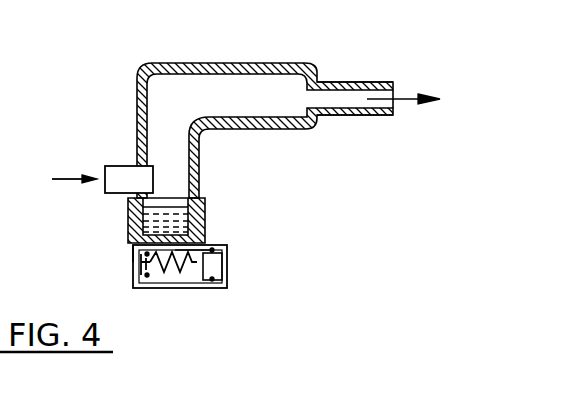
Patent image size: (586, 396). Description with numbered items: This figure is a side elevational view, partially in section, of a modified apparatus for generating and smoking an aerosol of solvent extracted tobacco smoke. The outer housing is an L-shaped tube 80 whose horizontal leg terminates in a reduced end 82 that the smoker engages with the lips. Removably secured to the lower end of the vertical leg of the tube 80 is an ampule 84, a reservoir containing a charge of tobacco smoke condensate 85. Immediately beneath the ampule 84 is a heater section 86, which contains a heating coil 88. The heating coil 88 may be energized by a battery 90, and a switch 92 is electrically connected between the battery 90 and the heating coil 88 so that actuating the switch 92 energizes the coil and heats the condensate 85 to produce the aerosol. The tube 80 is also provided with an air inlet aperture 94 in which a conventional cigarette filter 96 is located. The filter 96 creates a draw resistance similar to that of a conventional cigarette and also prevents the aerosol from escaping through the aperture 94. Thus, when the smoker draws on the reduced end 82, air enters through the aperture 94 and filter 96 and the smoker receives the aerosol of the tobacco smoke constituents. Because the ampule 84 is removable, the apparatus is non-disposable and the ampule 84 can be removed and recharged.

The L-shaped tube 80 is at (233, 63).
The reduced end 82 is at (346, 82).
The ampule 84 is at (206, 225).
The tobacco smoke condensate 85 is at (183, 212).
The heater section 86 is at (124, 254).
The heating coil 88 is at (195, 265).
The battery 90 is at (214, 274).
The switch 92 is at (135, 262).
The air inlet aperture 94 is at (133, 166).
The cigarette filter 96 is at (119, 178).